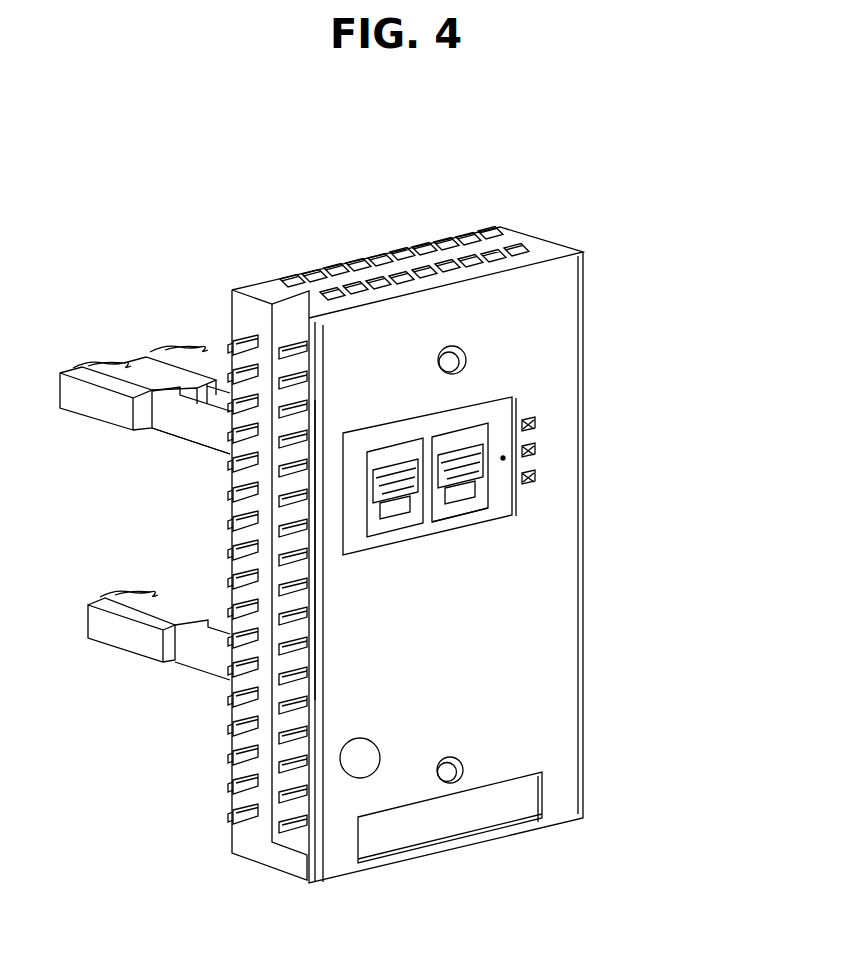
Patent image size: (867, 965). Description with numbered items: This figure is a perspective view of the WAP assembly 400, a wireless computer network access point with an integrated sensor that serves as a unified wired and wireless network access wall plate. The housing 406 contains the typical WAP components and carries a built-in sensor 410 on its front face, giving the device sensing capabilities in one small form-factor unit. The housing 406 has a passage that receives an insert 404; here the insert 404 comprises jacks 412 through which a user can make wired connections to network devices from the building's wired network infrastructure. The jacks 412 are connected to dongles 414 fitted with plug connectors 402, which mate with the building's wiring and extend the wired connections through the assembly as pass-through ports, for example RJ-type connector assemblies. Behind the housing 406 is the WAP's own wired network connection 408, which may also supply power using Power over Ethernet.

The WAP assembly 400 is at (652, 164).
The plug connectors 402 is at (145, 381).
The insert 404 is at (387, 425).
The housing 406 is at (522, 596).
The wired network connection 408 is at (159, 618).
The sensor 410 is at (360, 758).
The jacks 412 is at (492, 508).
The dongles 414 is at (191, 452).